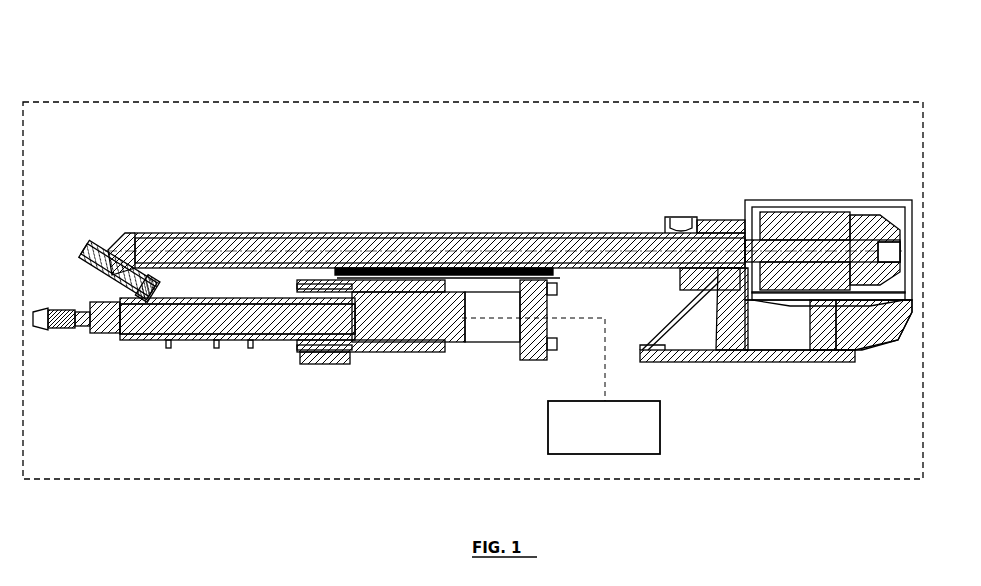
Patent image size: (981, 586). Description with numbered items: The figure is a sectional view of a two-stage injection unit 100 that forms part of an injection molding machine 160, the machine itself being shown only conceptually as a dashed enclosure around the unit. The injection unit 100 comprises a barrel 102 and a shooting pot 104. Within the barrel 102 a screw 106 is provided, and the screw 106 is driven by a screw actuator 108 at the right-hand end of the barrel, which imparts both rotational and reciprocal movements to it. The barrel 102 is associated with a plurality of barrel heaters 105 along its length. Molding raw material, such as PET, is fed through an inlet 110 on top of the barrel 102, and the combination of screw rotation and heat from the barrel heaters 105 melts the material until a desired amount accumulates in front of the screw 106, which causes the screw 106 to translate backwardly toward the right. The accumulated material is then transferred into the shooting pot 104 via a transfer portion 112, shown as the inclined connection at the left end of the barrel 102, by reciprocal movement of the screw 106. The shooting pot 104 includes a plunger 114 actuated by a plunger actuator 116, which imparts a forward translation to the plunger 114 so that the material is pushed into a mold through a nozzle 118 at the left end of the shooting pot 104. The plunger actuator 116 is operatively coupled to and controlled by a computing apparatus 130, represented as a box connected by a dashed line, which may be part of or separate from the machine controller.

The injection unit 100 is at (753, 62).
The injection molding machine 160 is at (68, 133).
The barrel 102 is at (566, 208).
The barrel heaters 105 is at (452, 230).
The screw 106 is at (347, 244).
The inlet 110 is at (687, 210).
The screw actuator 108 is at (915, 200).
The transfer portion 112 is at (89, 292).
The shooting pot 104 is at (204, 383).
The nozzle 118 is at (46, 333).
The plunger 114 is at (262, 320).
The plunger actuator 116 is at (545, 365).
The computing apparatus 130 is at (618, 440).